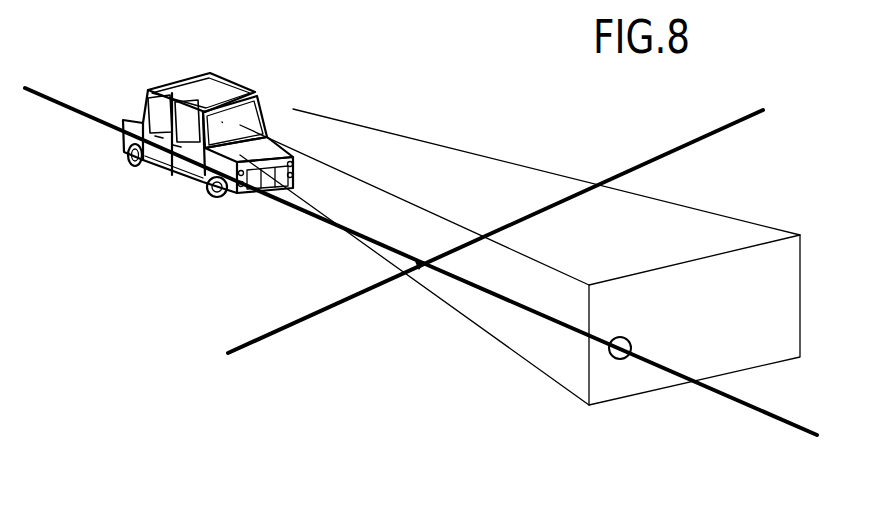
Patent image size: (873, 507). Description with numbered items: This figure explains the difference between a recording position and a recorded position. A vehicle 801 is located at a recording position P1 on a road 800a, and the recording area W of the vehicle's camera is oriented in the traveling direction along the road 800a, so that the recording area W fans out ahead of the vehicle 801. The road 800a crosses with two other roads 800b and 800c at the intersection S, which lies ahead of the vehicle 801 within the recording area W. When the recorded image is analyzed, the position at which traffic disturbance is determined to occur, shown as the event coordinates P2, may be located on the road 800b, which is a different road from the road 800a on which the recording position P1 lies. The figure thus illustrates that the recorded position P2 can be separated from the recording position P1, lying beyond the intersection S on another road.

The road 800a is at (57, 103).
The road 800b is at (548, 320).
The road 800c is at (297, 327).
The vehicle 801 is at (187, 180).
The recording position P1 is at (222, 122).
The event coordinates P2 is at (620, 337).
The intersection S is at (423, 263).
The recording area W is at (483, 155).